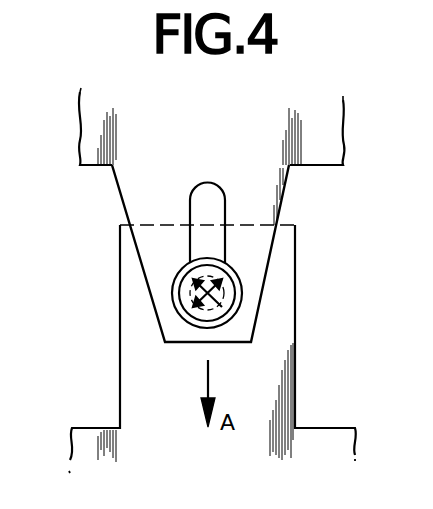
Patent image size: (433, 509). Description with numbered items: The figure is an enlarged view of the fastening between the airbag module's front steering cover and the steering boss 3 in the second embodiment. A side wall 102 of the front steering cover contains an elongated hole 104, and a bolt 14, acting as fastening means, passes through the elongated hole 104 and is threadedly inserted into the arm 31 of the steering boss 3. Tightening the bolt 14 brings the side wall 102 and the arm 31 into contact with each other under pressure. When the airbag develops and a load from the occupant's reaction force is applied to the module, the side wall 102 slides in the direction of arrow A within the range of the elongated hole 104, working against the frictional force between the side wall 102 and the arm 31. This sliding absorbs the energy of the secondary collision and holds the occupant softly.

The side wall 102 is at (265, 188).
The elongated hole 104 is at (198, 199).
The steering boss 3 is at (330, 420).
The arm 31 is at (275, 303).
The bolt 14 is at (197, 293).